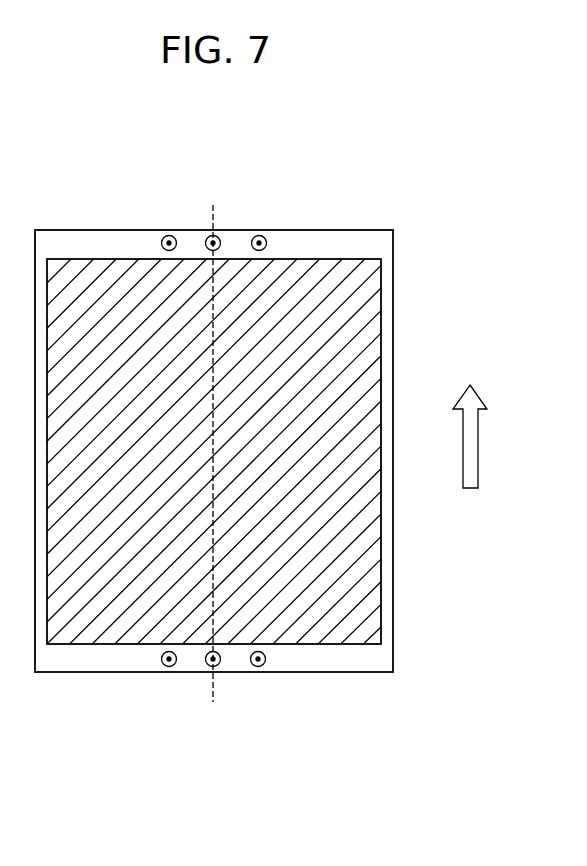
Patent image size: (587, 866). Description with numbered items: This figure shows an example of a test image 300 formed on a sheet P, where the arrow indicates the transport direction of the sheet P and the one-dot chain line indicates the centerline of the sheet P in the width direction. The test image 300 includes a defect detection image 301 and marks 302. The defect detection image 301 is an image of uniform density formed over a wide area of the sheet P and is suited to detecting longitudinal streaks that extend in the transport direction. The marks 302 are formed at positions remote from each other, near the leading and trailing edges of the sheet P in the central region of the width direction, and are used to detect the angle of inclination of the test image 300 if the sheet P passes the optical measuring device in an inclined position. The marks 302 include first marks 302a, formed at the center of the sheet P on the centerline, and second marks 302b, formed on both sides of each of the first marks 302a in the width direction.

The test image 300 is at (437, 218).
The defect detection image 301 is at (357, 319).
The marks 302 is at (313, 146).
The first marks 302a is at (215, 236).
The second marks 302b is at (169, 236).
The sheet P is at (357, 230).